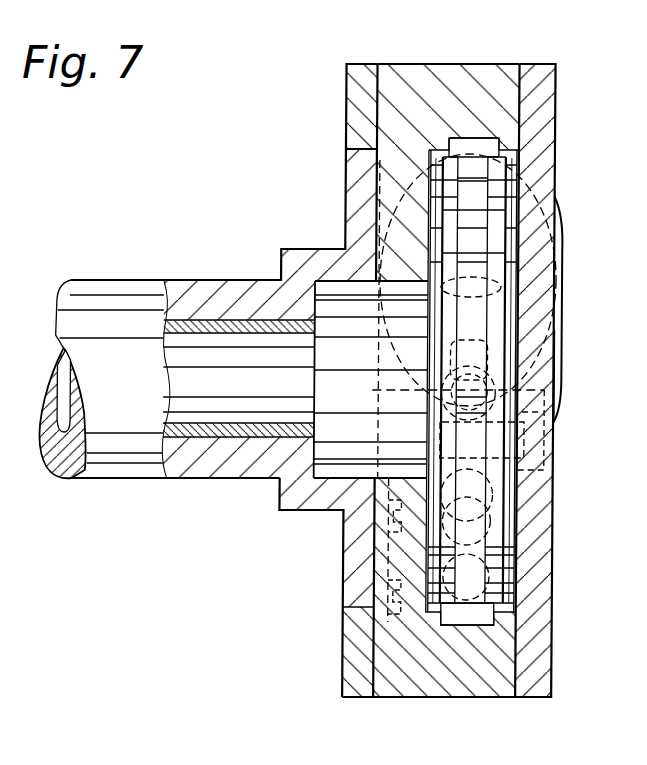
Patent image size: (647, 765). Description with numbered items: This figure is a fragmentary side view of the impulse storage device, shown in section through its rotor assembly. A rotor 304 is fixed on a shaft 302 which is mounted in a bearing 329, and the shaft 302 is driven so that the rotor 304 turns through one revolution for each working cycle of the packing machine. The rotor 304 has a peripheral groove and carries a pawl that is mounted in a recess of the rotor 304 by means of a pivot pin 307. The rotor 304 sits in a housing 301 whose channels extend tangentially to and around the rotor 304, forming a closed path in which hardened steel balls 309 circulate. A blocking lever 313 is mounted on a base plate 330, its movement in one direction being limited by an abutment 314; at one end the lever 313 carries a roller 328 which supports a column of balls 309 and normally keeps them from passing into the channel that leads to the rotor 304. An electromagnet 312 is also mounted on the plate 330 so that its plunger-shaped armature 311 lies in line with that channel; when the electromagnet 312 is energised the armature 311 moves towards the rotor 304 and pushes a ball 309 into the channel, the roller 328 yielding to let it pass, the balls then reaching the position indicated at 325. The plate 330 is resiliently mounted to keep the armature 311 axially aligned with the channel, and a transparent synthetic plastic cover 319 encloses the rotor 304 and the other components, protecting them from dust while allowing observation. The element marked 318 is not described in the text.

The housing 301 is at (466, 72).
The shaft 302 is at (241, 362).
The rotor 304 is at (472, 312).
The pivot pin 307 is at (443, 556).
The balls 309 is at (470, 530).
The armature 311 is at (478, 358).
The electromagnet 312 is at (557, 236).
The blocking lever 313 is at (530, 446).
The abutment 314 is at (383, 589).
The flange plate 318 is at (353, 169).
The transparent synthetic plastic cover 319 is at (542, 77).
The ball position in channel 325 is at (468, 588).
The roller 328 is at (493, 442).
The bearing 329 is at (208, 436).
The base plate 330 is at (369, 75).